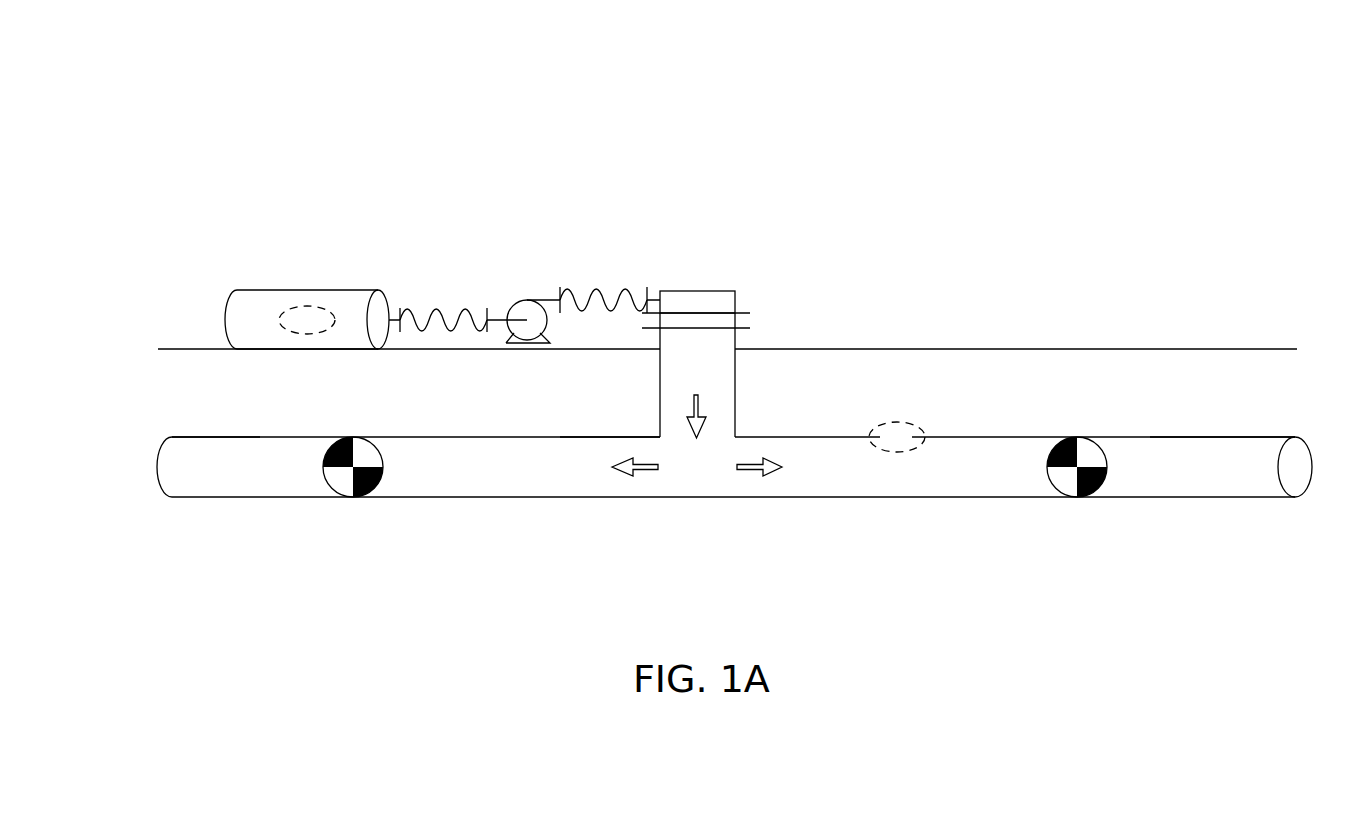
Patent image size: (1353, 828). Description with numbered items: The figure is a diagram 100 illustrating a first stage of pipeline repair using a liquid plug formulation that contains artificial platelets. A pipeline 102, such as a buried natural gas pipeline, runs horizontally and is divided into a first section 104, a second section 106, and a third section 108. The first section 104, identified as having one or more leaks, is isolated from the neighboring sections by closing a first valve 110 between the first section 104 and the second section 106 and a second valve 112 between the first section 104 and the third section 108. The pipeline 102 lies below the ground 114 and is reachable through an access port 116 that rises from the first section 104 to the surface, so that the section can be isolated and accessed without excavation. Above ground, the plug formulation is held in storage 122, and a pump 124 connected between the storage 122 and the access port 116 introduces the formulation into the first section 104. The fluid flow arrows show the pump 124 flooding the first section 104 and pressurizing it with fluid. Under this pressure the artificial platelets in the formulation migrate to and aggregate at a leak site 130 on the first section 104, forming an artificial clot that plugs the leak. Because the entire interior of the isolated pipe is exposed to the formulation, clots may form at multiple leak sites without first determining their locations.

The diagram 100 is at (283, 106).
The pipeline 102 is at (703, 507).
The first section 104 is at (585, 436).
The second section 106 is at (212, 436).
The third section 108 is at (1192, 436).
The first valve 110 is at (353, 497).
The second valve 112 is at (1077, 497).
The ground 114 is at (1190, 349).
The access port 116 is at (706, 278).
The storage 122 is at (273, 270).
The pump 124 is at (524, 286).
The leak site 130 is at (888, 426).